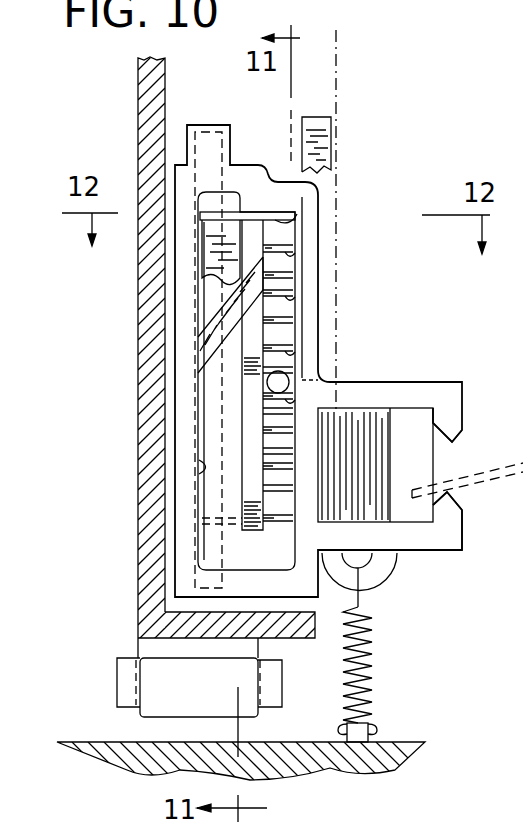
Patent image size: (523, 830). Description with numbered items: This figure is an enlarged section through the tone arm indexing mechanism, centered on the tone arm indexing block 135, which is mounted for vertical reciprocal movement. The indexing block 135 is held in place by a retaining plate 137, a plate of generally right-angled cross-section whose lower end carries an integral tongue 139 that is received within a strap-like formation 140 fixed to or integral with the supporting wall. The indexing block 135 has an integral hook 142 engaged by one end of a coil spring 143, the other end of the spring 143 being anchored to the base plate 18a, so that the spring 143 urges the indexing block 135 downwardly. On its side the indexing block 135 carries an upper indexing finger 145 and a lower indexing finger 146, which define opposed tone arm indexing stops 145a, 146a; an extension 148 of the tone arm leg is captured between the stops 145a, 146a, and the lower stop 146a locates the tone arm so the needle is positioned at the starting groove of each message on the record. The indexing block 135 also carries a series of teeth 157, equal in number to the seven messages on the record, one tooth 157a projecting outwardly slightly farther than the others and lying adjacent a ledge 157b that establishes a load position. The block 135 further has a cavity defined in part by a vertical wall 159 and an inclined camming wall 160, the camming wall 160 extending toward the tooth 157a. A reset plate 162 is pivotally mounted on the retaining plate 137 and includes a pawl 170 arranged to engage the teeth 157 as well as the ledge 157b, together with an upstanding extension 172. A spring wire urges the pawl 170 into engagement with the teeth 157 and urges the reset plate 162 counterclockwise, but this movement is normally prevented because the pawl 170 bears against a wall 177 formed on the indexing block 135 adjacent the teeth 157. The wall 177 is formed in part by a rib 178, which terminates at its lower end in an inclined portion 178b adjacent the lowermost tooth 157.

The base plate 18a is at (393, 740).
The tone arm indexing block 135 is at (320, 326).
The retaining plate 137 is at (140, 125).
The tongue 139 is at (157, 644).
The strap-like formation 140 is at (118, 690).
The hook 142 is at (385, 590).
The coil spring 143 is at (370, 667).
The upper indexing finger 145 is at (463, 398).
The upper tone arm indexing stop 145a is at (455, 443).
The lower indexing finger 146 is at (463, 517).
The lower tone arm indexing stop 146a is at (452, 485).
The extension 148 is at (488, 462).
The teeth 157 is at (296, 292).
The tooth 157a is at (296, 252).
The ledge 157b is at (296, 223).
The vertical wall 159 is at (203, 465).
The camming wall 160 is at (203, 343).
The reset plate 162 is at (334, 357).
The pawl 170 is at (295, 215).
The upstanding extension 172 is at (326, 134).
The wall 177 is at (266, 384).
The rib 178 is at (255, 428).
The inclined portion 178b is at (240, 510).